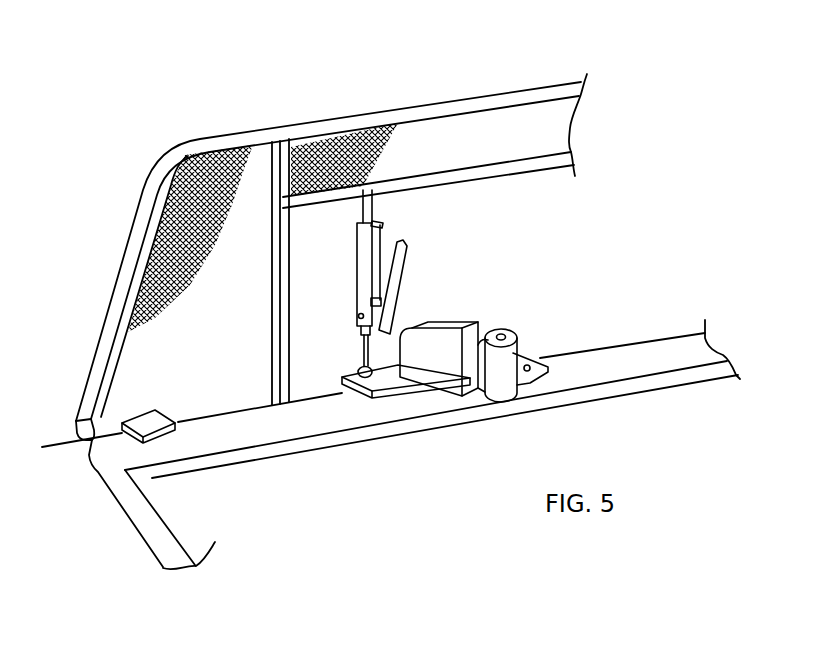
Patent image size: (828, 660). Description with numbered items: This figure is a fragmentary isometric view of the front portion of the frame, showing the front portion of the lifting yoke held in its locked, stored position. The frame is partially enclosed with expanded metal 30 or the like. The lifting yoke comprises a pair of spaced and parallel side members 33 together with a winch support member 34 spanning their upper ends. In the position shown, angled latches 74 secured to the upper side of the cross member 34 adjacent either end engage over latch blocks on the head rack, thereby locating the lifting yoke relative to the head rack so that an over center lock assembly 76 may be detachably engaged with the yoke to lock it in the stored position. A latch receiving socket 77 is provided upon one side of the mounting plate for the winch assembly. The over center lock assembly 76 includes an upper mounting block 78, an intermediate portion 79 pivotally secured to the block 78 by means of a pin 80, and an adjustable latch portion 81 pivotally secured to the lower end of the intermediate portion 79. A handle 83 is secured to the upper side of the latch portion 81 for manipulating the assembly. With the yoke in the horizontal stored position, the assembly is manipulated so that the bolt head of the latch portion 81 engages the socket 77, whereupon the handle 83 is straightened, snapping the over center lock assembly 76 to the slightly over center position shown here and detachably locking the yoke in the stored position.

The expanded metal 30 is at (250, 185).
The side members 33 is at (133, 514).
The winch support member 34 is at (395, 422).
The angled latches 74 is at (147, 423).
The over center lock assembly 76 is at (420, 208).
The latch receiving socket 77 is at (360, 371).
The upper mounting block 78 is at (363, 211).
The intermediate portion 79 is at (358, 265).
The pin 80 is at (380, 224).
The adjustable latch portion 81 is at (373, 353).
The handle 83 is at (408, 264).